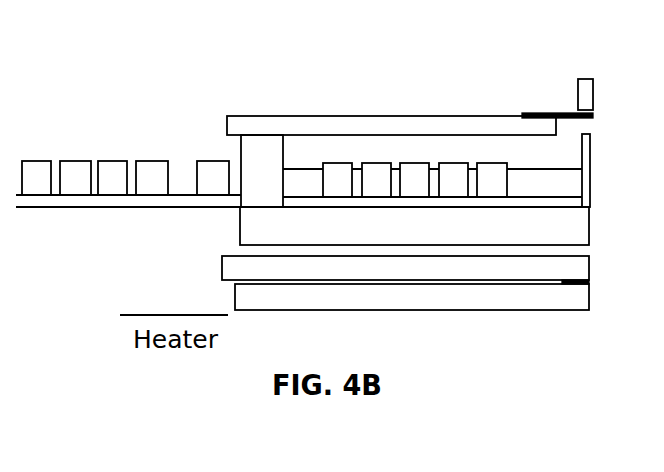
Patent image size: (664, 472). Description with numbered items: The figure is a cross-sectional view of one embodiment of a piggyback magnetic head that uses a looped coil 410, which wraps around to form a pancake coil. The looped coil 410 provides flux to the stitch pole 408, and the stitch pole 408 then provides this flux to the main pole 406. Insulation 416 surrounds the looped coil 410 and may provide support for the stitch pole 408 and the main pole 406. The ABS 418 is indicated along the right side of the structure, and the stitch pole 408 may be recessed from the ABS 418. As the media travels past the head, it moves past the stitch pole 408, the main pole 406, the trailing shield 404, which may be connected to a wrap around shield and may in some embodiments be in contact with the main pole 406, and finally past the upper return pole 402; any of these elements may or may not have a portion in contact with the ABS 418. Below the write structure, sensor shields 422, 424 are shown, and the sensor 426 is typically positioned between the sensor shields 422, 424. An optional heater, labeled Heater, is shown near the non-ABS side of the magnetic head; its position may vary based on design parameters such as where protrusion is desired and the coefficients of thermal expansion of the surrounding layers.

The upper return pole 402 is at (594, 90).
The trailing shield 404 is at (591, 177).
The main pole 406 is at (560, 113).
The stitch pole 408 is at (417, 115).
The looped coil 410 is at (490, 161).
The insulation 416 is at (467, 236).
The ABS 418 is at (620, 227).
The sensor shield 422 is at (222, 270).
The sensor shield 424 is at (235, 290).
The sensor 426 is at (583, 270).